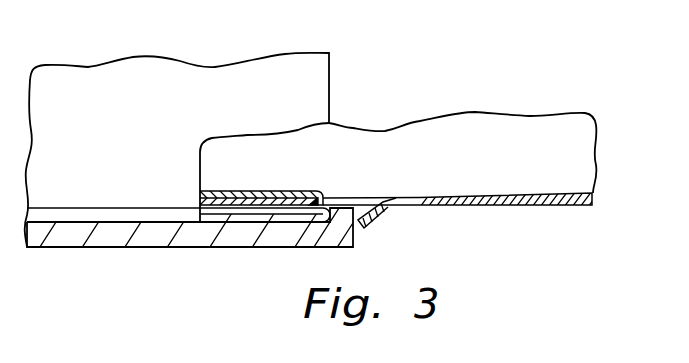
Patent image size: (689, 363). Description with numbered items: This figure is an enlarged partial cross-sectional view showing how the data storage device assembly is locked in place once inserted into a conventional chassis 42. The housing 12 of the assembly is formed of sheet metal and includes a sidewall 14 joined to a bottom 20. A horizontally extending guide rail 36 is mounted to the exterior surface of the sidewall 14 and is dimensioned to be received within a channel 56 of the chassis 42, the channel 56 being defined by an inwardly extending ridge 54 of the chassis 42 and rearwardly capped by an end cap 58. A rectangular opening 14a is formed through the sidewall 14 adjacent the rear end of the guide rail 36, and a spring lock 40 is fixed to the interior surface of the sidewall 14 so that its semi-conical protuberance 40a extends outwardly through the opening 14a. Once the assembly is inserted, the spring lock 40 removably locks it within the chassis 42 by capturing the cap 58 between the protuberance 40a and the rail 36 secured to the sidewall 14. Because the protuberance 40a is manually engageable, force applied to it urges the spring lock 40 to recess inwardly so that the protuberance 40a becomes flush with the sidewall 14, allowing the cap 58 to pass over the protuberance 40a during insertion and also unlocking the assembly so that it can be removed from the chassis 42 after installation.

The housing 12 is at (606, 112).
The bottom 20 is at (528, 122).
The sidewall 14 is at (520, 208).
The rectangular opening 14a is at (414, 208).
The spring lock 40 is at (304, 190).
The semi-conical protuberance 40a is at (370, 226).
The guide rail 36 is at (248, 222).
The ridge 54 is at (74, 216).
The channel 56 is at (136, 223).
The end cap 58 is at (200, 223).
The chassis 42 is at (55, 262).